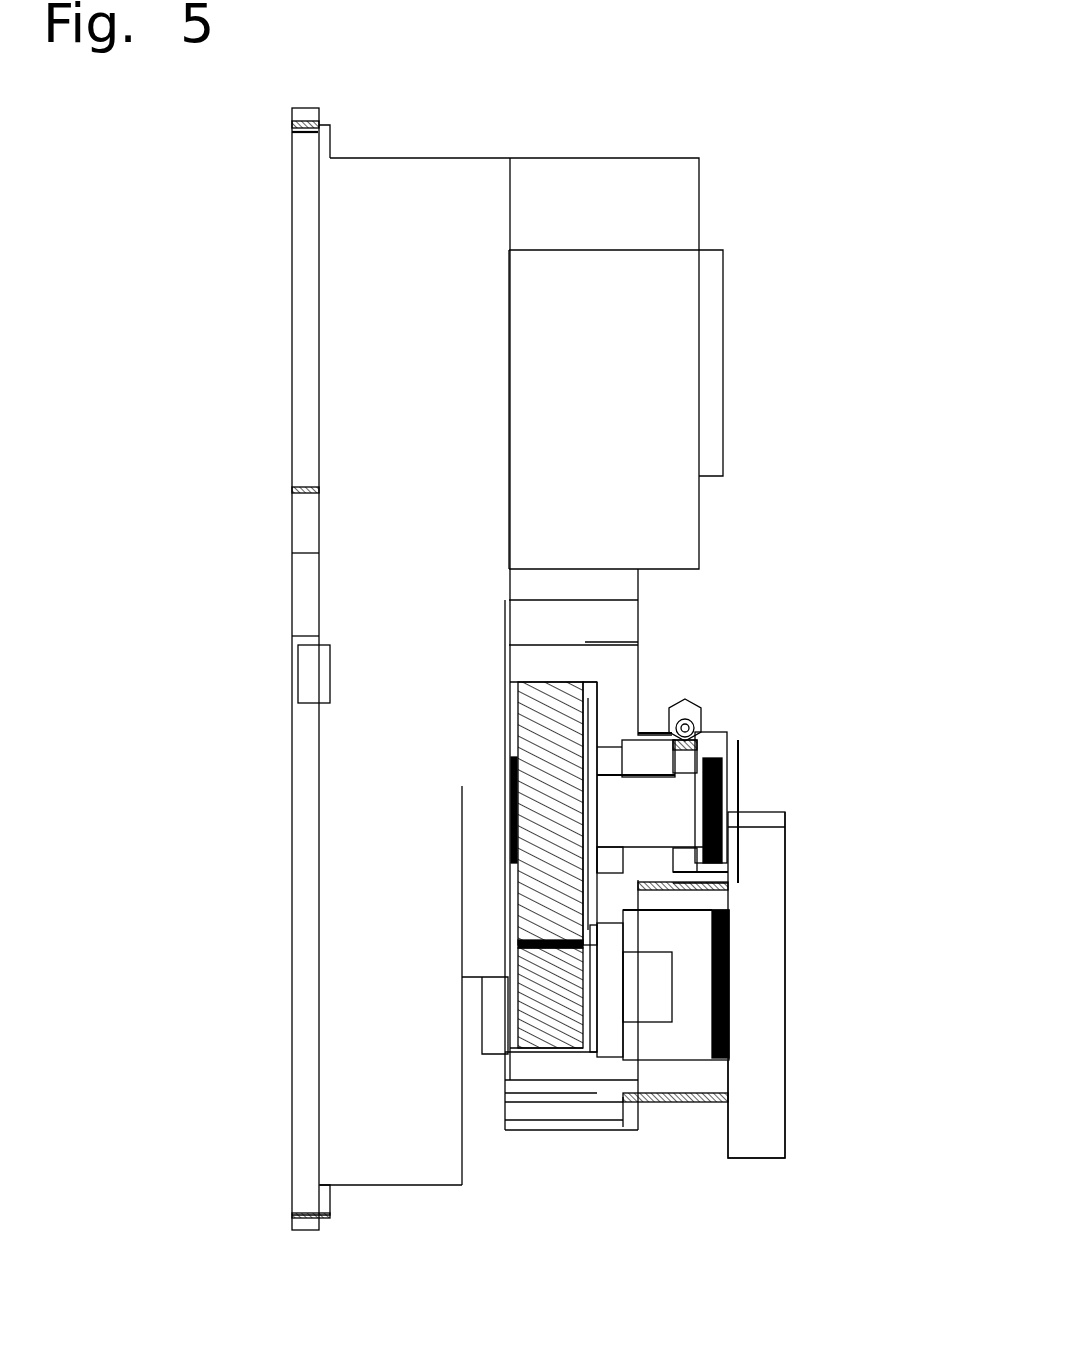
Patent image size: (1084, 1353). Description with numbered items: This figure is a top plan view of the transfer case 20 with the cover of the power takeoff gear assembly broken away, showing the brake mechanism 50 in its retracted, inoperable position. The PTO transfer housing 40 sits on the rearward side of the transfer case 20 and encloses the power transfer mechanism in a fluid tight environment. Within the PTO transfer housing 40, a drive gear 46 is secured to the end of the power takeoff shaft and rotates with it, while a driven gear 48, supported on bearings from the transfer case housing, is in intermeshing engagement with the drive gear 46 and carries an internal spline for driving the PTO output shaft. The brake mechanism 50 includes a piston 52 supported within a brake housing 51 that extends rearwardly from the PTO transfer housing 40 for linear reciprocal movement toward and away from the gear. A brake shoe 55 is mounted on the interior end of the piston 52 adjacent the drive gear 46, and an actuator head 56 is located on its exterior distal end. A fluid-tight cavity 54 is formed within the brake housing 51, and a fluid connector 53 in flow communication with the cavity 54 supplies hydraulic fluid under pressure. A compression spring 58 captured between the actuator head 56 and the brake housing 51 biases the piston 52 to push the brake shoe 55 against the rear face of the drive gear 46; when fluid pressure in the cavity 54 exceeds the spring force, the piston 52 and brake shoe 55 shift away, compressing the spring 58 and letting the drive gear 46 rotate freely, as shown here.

The transfer case 20 is at (418, 1168).
The PTO transfer housing 40 is at (638, 1135).
The drive gear 46 is at (590, 728).
The driven gear 48 is at (560, 1028).
The brake mechanism 50 is at (818, 808).
The brake housing 51 is at (677, 890).
The piston 52 is at (690, 858).
The fluid connector 53 is at (680, 790).
The fluid-tight cavity 54 is at (740, 812).
The brake shoe 55 is at (602, 772).
The actuator head 56 is at (697, 867).
The compression spring 58 is at (727, 830).